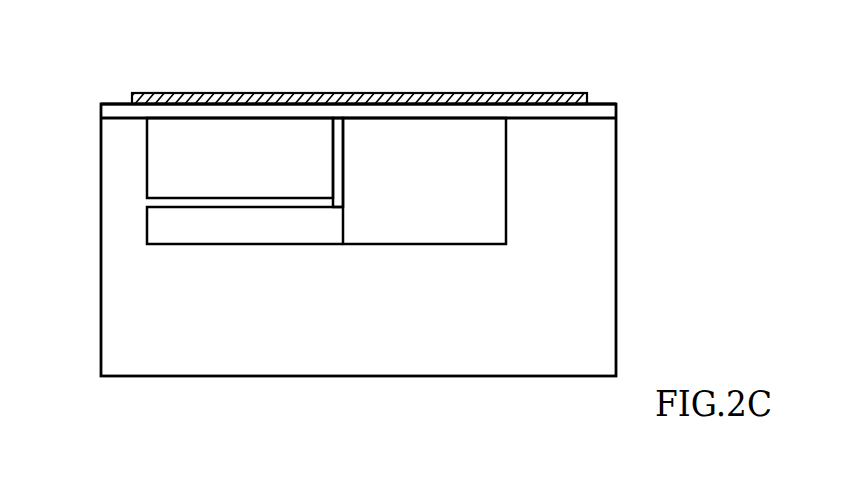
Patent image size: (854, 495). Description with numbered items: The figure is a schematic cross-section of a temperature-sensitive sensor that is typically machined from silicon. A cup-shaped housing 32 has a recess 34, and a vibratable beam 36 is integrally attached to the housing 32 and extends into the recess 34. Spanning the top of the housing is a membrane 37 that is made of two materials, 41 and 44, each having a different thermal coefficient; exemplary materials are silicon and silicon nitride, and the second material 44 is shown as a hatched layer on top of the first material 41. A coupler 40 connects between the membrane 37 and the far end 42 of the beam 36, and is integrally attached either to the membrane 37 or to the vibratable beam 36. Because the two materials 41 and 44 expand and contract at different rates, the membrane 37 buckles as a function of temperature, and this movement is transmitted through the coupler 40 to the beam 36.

The cup-shaped housing 32 is at (155, 335).
The recess 34 is at (490, 207).
The vibratable beam 36 is at (182, 203).
The membrane 37 is at (613, 92).
The coupler 40 is at (345, 140).
The first membrane material 41 is at (115, 108).
The far end of beam 42 is at (336, 206).
The second membrane material 44 is at (408, 95).